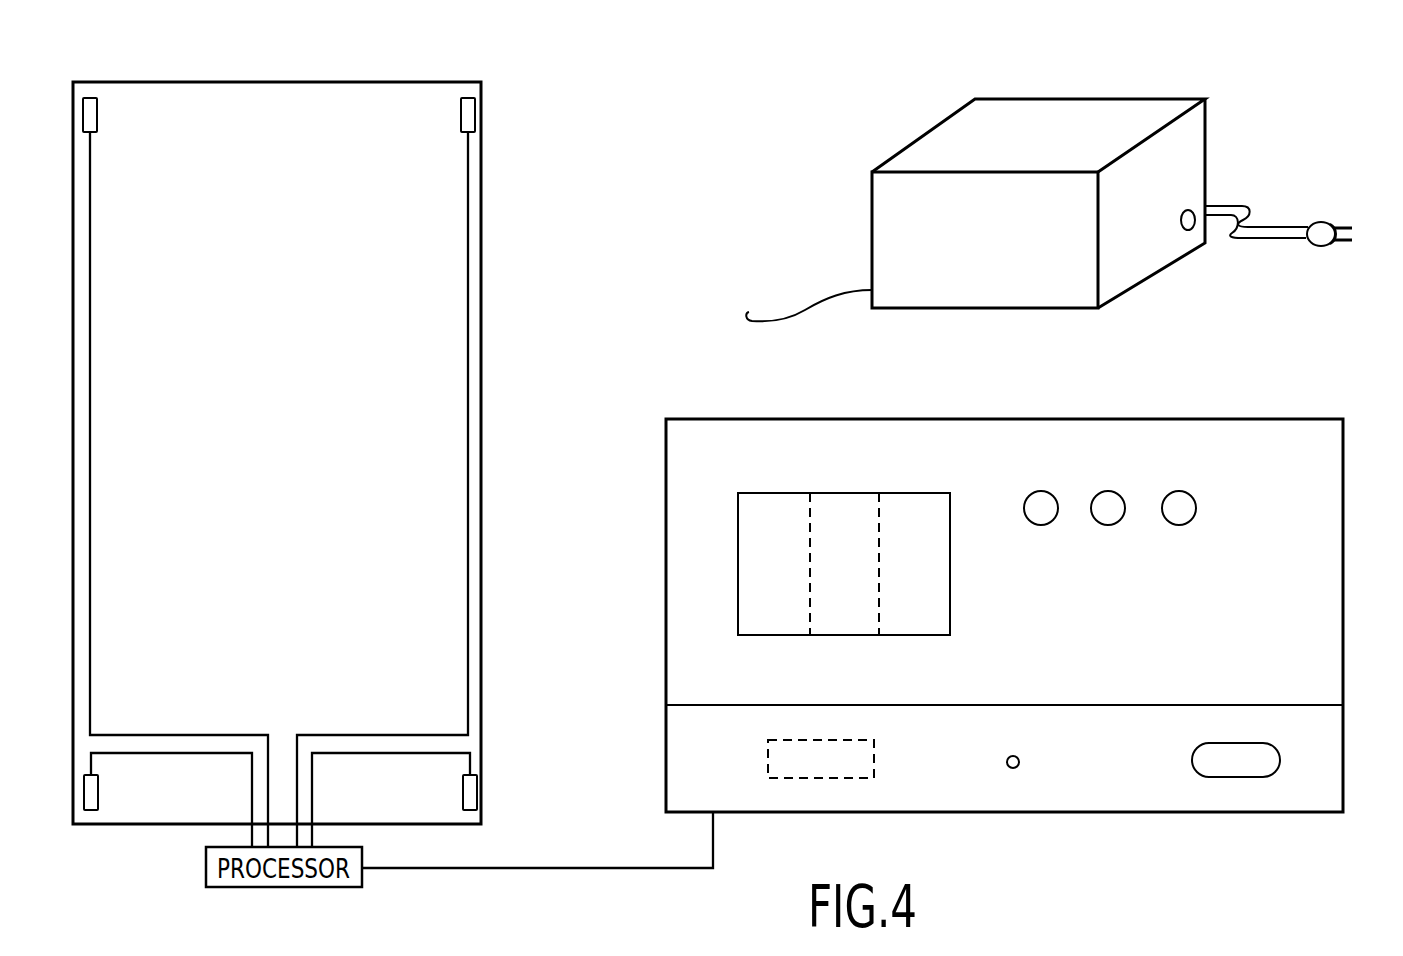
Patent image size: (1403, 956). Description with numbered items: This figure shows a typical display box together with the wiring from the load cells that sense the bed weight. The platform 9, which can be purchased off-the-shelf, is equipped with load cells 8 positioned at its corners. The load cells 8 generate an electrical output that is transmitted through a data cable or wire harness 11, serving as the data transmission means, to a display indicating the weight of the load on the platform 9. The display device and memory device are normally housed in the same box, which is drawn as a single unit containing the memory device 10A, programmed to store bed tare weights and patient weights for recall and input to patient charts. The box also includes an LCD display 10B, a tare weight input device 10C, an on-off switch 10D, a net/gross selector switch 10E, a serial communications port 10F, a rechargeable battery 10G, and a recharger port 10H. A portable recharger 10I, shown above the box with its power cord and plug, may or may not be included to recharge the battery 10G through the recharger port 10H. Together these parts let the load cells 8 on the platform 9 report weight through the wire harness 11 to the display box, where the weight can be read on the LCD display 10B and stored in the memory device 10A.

The load cells 8 is at (105, 117).
The platform 9 is at (297, 424).
The data cable or wire harness 11 is at (392, 728).
The memory device 10A is at (1257, 415).
The LCD display 10B is at (862, 586).
The tare weight input device 10C is at (1044, 514).
The on-off switch 10D is at (1110, 514).
The net/gross selector switch 10E is at (1181, 512).
The RS-232 port 10F is at (1210, 757).
The rechargeable battery 10G is at (857, 760).
The recharger port 10H is at (1013, 768).
The portable recharger 10I is at (997, 276).